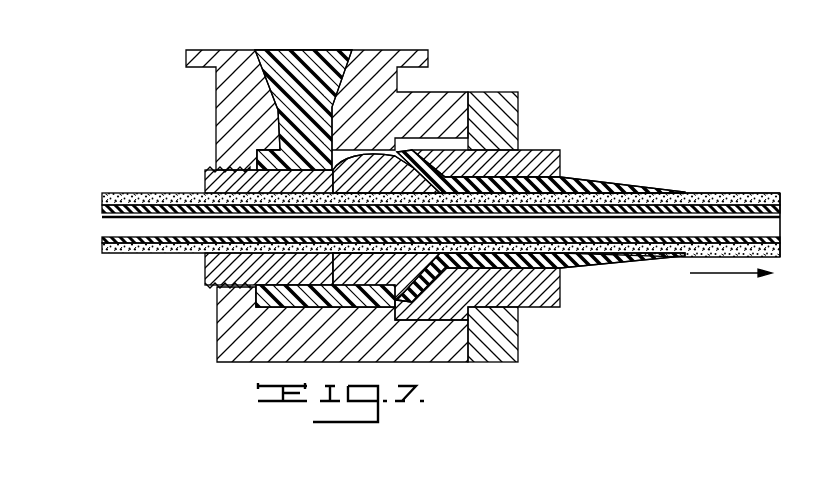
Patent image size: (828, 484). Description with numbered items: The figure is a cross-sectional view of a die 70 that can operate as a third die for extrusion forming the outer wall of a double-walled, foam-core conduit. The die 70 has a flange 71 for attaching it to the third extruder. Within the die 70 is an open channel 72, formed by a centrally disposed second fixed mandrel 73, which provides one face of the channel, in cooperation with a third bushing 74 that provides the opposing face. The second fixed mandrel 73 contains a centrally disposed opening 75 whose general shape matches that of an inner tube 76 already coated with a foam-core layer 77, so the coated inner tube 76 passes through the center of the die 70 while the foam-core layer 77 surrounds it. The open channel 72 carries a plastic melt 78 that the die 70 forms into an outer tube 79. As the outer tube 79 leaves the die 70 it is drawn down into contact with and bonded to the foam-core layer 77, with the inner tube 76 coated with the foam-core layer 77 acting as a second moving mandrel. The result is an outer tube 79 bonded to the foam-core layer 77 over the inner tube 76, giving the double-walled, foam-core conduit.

The die 70 is at (476, 55).
The flange 71 is at (203, 50).
The open channel 72 is at (562, 178).
The second fixed mandrel 73 is at (208, 168).
The third bushing 74 is at (560, 177).
The centrally disposed opening 75 is at (147, 227).
The inner tube 76 is at (102, 217).
The foam-core layer 77 is at (138, 193).
The plastic melt 78 is at (306, 50).
The outer tube 79 is at (623, 190).